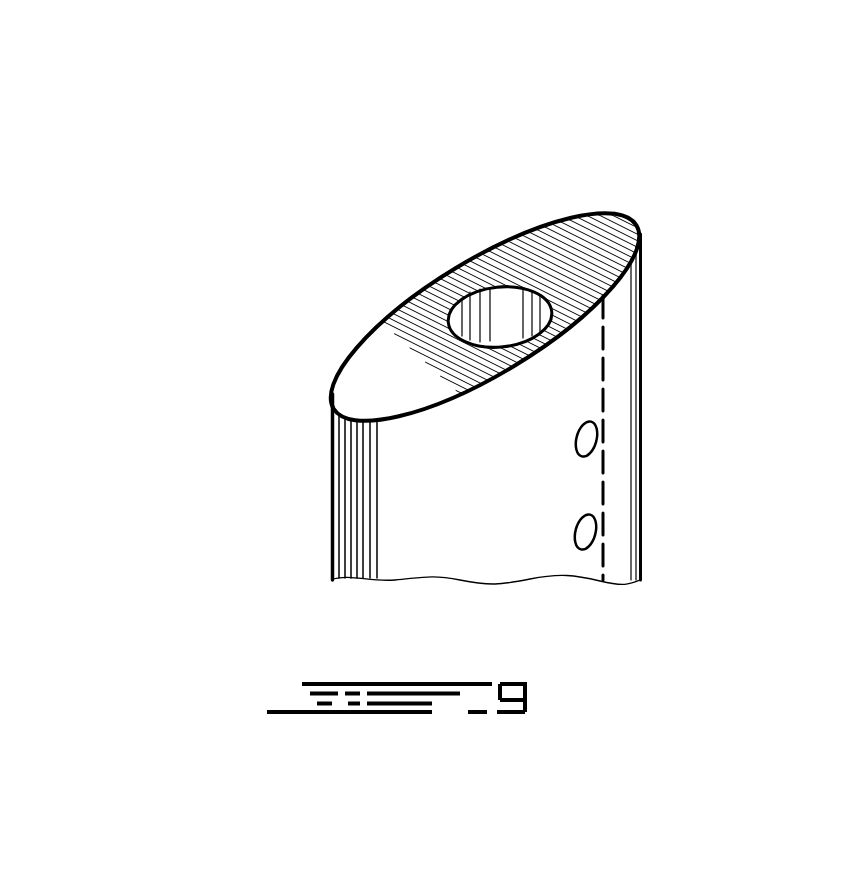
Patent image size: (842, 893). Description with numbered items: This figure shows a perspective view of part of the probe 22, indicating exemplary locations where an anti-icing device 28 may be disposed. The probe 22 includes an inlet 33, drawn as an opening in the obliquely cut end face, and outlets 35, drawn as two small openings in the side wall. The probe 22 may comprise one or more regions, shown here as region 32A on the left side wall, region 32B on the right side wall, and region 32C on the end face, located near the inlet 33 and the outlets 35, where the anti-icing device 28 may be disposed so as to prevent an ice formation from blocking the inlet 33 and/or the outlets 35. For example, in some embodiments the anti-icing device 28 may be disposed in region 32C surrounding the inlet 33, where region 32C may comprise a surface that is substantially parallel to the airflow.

The probe 22 is at (233, 184).
The anti-icing device 28 is at (484, 375).
The region 32A is at (397, 512).
The region 32B is at (622, 383).
The region 32C is at (427, 360).
The inlet 33 is at (500, 317).
The outlets 35 is at (598, 441).